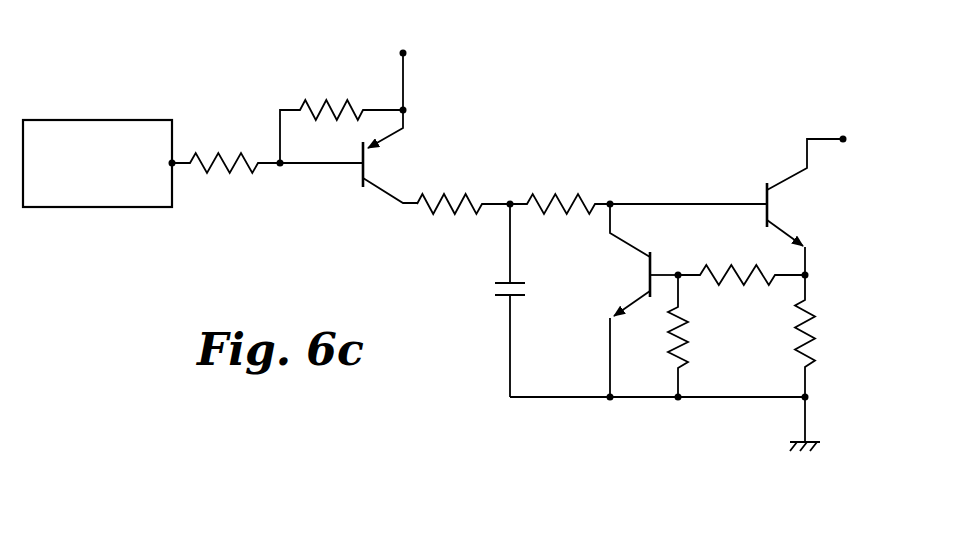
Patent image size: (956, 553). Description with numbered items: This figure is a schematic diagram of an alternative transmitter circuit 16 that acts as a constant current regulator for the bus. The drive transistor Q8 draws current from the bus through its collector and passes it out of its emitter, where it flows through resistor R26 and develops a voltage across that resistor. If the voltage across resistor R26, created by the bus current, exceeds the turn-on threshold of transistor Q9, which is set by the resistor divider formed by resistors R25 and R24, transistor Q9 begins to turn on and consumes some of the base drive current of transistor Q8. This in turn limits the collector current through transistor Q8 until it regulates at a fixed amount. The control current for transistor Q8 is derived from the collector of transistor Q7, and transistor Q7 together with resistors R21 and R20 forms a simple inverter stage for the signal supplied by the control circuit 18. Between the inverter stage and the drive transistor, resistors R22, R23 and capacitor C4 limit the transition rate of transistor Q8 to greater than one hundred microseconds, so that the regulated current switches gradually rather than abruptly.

The transmitter circuit 16 is at (613, 103).
The control circuit 18 is at (90, 207).
The resistor R20 is at (226, 147).
The resistor R21 is at (343, 112).
The resistor R22 is at (465, 219).
The resistor R23 is at (562, 185).
The resistor R24 is at (701, 338).
The resistor R25 is at (743, 258).
The resistor R26 is at (827, 336).
The transistor Q7 is at (348, 156).
The drive transistor Q8 is at (726, 207).
The transistor Q9 is at (642, 302).
The capacitor C4 is at (492, 300).